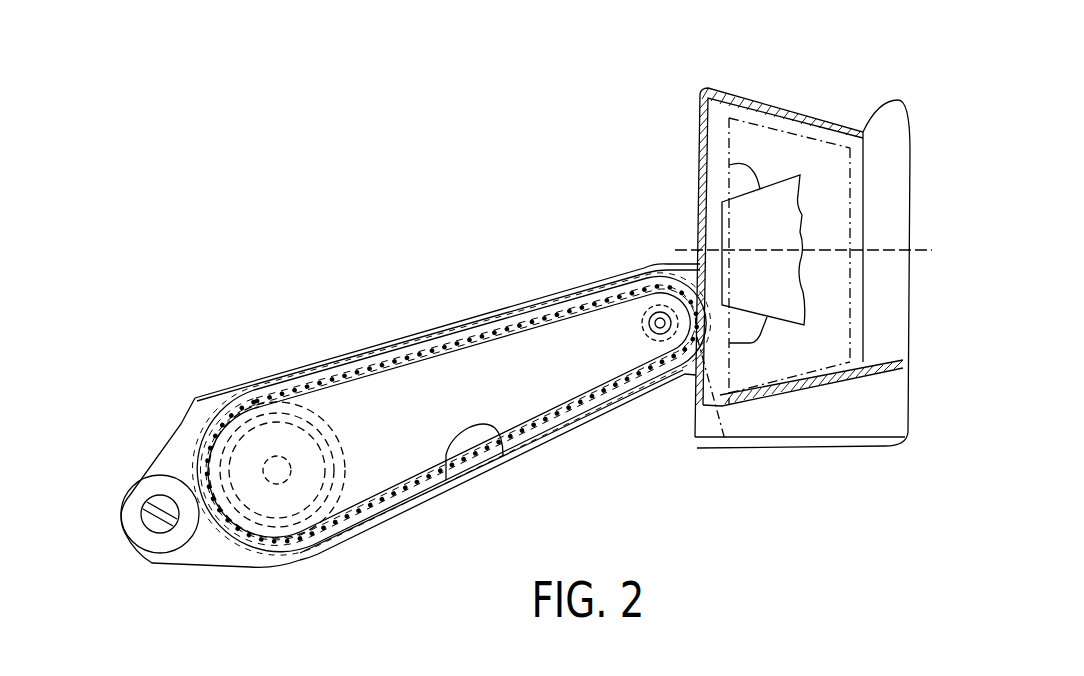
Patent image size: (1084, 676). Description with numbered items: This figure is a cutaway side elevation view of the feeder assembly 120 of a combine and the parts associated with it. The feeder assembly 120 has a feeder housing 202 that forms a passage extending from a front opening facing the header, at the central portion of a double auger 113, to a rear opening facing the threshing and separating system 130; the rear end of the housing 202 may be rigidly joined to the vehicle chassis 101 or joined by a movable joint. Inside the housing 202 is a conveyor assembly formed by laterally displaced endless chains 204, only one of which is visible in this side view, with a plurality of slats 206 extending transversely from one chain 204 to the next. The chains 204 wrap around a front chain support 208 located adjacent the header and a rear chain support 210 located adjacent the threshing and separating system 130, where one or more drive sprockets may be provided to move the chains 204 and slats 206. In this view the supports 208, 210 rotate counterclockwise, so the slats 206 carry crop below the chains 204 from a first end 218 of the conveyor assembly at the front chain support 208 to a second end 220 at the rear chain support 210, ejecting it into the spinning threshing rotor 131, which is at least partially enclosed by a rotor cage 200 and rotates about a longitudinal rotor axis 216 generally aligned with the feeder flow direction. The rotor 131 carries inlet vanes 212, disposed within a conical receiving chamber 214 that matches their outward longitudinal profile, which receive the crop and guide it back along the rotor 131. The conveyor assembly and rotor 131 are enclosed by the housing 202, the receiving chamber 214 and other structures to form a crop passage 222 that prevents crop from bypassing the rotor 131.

The chassis 101 is at (716, 87).
The double auger 113 is at (160, 503).
The feeder assembly 120 is at (458, 256).
The threshing and separating system 130 is at (875, 412).
The threshing rotor 131 is at (772, 200).
The rotor cage 200 is at (872, 130).
The feeder housing 202 is at (565, 290).
The endless chain 204 is at (374, 380).
The slat 206 is at (560, 433).
The front chain support 208 is at (348, 540).
The rear chain support 210 is at (643, 320).
The inlet vane 212 is at (745, 328).
The conical receiving chamber 214 is at (815, 378).
The longitudinal rotor axis 216 is at (687, 250).
The first end of the conveyor assembly 218 is at (225, 550).
The second end of the conveyor assembly 220 is at (723, 442).
The crop passage 222 is at (698, 281).